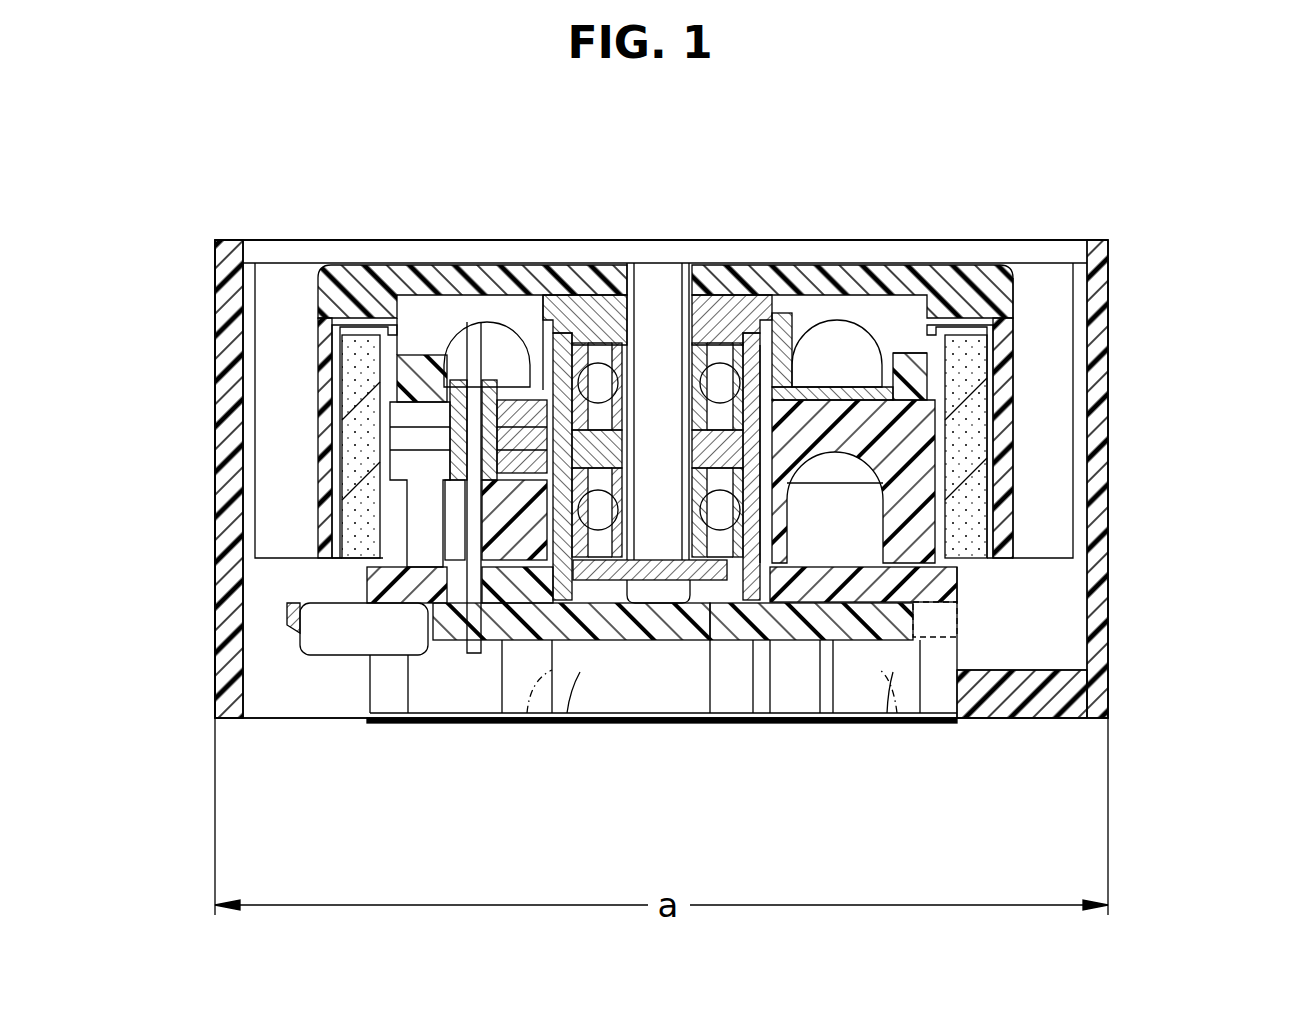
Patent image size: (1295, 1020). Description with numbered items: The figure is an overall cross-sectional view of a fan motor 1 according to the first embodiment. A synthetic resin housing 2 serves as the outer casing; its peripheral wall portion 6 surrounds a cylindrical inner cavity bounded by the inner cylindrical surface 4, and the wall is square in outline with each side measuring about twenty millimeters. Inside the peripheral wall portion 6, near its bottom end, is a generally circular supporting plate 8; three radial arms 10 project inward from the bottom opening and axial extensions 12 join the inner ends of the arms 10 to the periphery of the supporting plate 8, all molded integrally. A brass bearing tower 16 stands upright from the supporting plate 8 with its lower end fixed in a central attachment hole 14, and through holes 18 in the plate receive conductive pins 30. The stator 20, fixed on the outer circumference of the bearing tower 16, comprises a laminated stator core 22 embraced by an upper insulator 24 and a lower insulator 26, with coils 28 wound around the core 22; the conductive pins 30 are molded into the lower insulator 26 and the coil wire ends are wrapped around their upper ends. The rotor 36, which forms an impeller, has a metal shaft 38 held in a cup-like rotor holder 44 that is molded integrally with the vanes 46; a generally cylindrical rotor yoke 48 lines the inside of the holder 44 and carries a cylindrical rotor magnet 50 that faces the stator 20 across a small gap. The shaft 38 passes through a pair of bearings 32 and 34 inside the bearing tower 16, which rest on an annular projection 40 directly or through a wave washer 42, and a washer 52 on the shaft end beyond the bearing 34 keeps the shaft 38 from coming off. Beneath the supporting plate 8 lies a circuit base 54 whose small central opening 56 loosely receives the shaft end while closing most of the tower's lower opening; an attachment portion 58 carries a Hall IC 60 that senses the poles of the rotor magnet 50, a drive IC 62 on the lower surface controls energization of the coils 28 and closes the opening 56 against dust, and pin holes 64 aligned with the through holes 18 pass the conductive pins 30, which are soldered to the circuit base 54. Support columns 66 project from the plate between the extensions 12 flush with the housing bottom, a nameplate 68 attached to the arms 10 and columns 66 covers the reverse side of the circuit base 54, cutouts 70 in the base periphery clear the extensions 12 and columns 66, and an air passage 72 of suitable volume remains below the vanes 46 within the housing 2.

The fan motor 1 is at (670, 139).
The housing 2 is at (1108, 276).
The inner cylindrical surface 4 is at (240, 586).
The peripheral wall portion 6 is at (222, 396).
The supporting plate 8 is at (915, 680).
The radial arms 10 is at (1010, 690).
The axial extensions 12 is at (1005, 658).
The attachment hole 14 is at (775, 640).
The bearing tower 16 is at (536, 290).
The through holes 18 is at (395, 657).
The stator 20 is at (880, 306).
The stator core 22 is at (1010, 372).
The upper insulator 24 is at (897, 392).
The lower insulator 26 is at (1000, 462).
The coils 28 is at (840, 340).
The conductive pins 30 is at (450, 590).
The bearing 32 is at (718, 348).
The bearing 34 is at (680, 620).
The rotor 36 is at (355, 244).
The shaft 38 is at (668, 270).
The annular projection 40 is at (640, 445).
The wave washer 42 is at (800, 400).
The rotor holder 44 is at (455, 270).
The vanes 46 is at (270, 452).
The rotor yoke 48 is at (1020, 340).
The rotor magnet 50 is at (970, 440).
The washer 52 is at (600, 620).
The circuit base 54 is at (833, 657).
The opening 56 is at (726, 650).
The attachment portion 58 is at (292, 625).
The Hall IC 60 is at (340, 652).
The drive IC 62 is at (530, 640).
The pin holes 64 is at (476, 655).
The support columns 66 is at (567, 713).
The nameplate 68 is at (812, 650).
The cutouts 70 is at (1000, 612).
The air passage 72 is at (1065, 620).